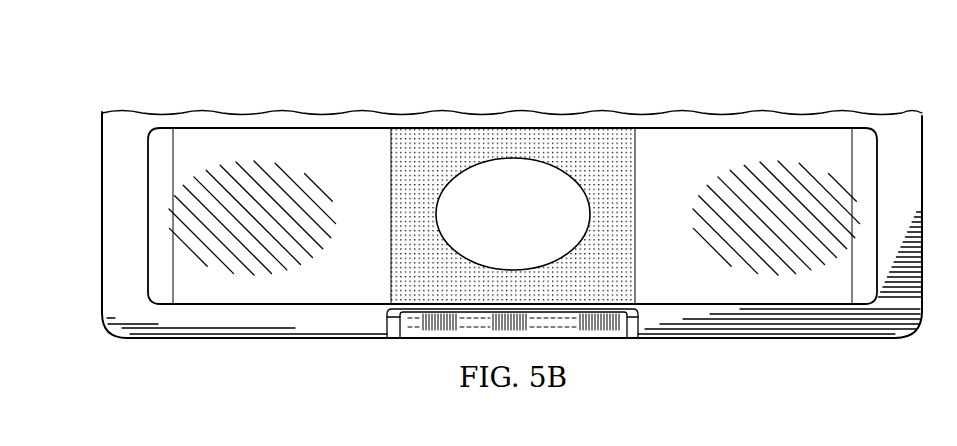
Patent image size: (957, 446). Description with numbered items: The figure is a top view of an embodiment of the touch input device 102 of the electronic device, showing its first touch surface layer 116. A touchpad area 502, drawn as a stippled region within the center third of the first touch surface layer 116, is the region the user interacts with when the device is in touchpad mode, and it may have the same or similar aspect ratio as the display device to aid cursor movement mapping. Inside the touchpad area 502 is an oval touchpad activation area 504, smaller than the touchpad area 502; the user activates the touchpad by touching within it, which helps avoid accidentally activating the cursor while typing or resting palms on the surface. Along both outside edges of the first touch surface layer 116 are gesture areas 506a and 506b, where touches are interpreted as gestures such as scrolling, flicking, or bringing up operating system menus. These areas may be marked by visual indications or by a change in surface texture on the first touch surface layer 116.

The touch input device 102 is at (148, 241).
The first touch surface layer 116 is at (278, 150).
The touchpad area 502 is at (445, 150).
The touchpad activation area 504 is at (513, 214).
The gesture area 506a is at (160, 148).
The gesture area 506b is at (863, 150).